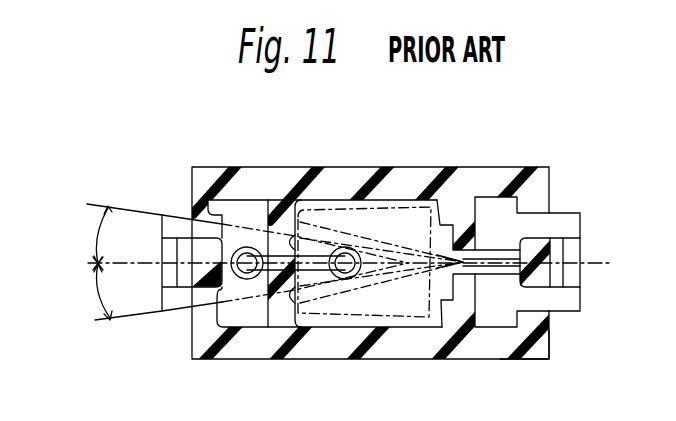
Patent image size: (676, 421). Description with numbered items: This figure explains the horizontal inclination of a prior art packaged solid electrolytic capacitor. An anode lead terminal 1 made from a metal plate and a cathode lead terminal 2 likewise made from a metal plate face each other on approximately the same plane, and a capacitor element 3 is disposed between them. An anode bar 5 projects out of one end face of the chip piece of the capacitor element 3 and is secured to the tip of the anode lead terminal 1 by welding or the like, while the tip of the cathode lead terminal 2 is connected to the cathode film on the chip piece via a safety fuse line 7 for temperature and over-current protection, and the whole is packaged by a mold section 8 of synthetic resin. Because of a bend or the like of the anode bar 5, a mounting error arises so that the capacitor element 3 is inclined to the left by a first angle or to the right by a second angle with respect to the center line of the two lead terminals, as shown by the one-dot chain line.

The anode lead terminal 1 is at (572, 215).
The cathode lead terminal 2 is at (170, 293).
The capacitor element 3 is at (387, 203).
The anode bar 5 is at (495, 258).
The safety fuse line 7 is at (255, 247).
The mold section 8 is at (545, 345).